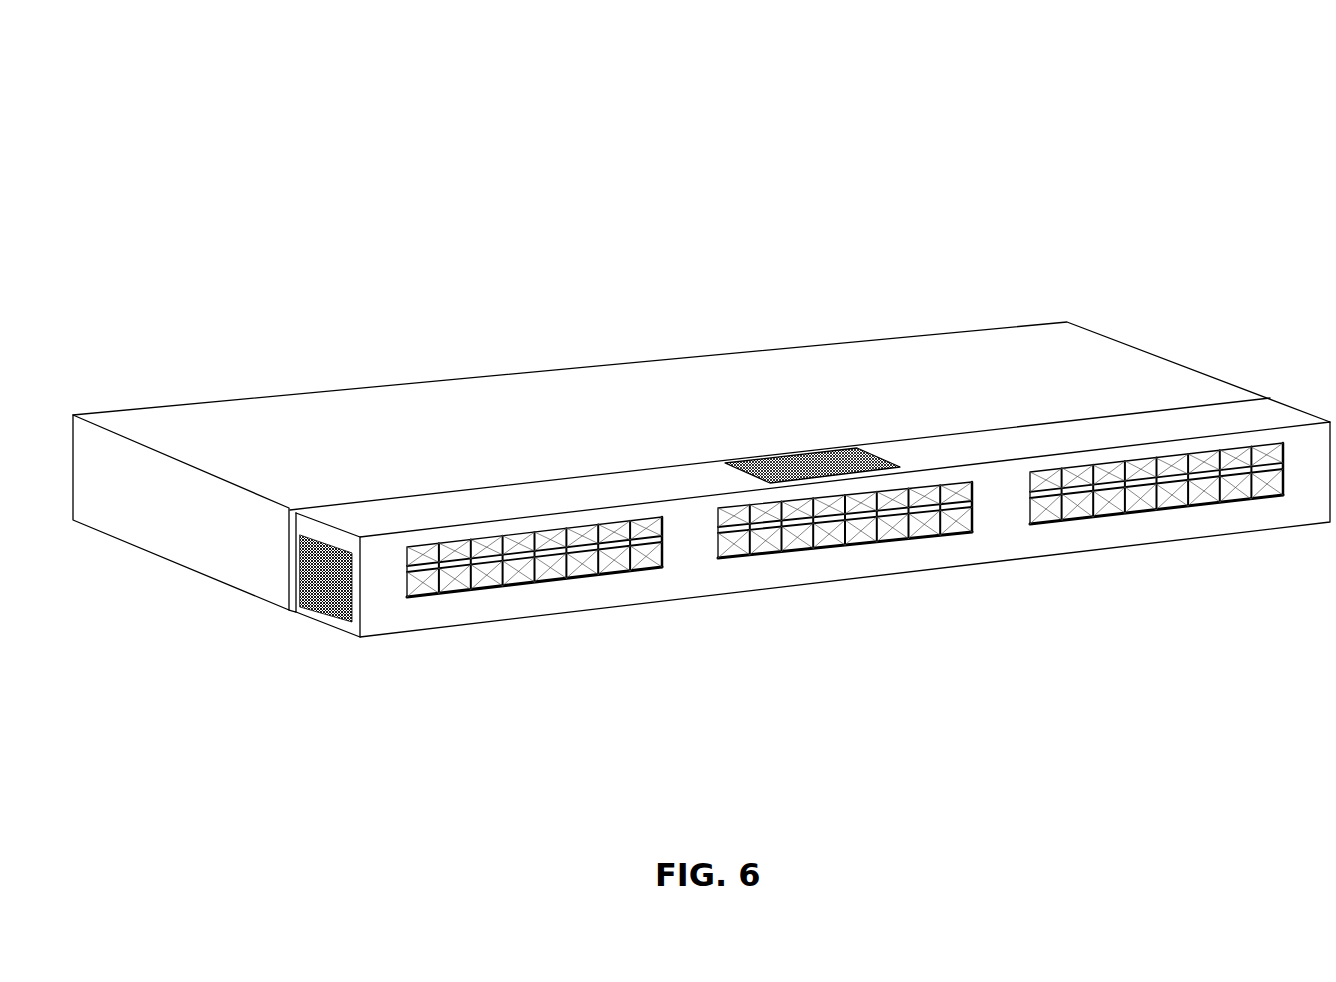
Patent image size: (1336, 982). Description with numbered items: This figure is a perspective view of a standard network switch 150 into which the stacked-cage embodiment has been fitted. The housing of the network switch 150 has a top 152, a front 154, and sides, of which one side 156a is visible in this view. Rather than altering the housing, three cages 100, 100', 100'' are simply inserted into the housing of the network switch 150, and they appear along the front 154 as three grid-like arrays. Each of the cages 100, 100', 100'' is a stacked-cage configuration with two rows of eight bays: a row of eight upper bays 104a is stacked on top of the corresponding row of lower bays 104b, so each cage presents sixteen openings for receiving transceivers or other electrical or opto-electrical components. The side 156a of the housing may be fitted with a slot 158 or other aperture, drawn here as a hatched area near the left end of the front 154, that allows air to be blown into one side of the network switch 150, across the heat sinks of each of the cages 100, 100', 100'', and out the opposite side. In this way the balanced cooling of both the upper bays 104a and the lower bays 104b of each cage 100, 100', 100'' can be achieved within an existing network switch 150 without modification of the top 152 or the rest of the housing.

The network switch 150 is at (1032, 111).
The top 152 is at (902, 360).
The front 154 is at (1305, 488).
The side 156a is at (190, 533).
The slot 158 is at (322, 585).
The cage 100 is at (831, 557).
The cage 100' is at (1156, 518).
The cage 100'' is at (534, 587).
The upper bays 104a is at (726, 522).
The lower bays 104b is at (758, 555).